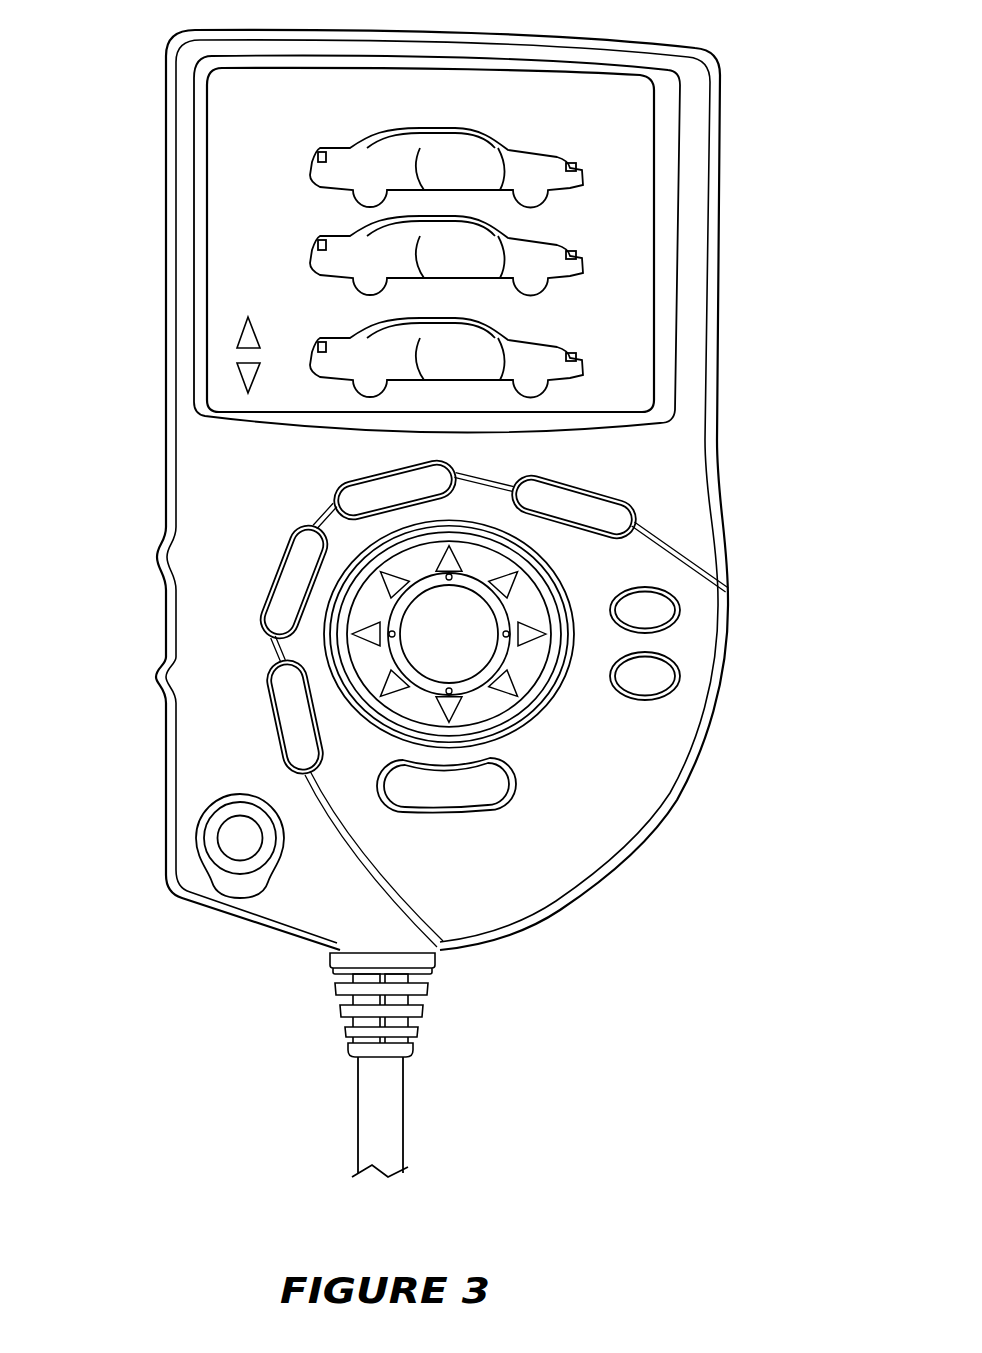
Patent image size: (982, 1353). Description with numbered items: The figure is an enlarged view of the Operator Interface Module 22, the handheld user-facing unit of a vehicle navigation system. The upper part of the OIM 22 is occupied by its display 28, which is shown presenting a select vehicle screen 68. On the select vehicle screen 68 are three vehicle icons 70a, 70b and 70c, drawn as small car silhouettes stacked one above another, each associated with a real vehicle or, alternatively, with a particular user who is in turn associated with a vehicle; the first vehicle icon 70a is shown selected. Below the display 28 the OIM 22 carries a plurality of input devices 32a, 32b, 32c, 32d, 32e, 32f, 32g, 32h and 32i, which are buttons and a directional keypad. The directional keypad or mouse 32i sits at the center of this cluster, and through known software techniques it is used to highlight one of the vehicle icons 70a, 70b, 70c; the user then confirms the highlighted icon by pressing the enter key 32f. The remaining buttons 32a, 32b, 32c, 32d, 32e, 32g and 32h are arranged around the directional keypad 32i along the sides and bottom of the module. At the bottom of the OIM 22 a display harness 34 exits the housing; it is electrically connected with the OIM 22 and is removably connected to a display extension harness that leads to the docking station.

The Operator Interface Module 22 is at (740, 60).
The display 28 is at (655, 248).
The select vehicle screen 68 is at (228, 133).
The vehicle icon 70a is at (537, 162).
The vehicle icon 70b is at (537, 250).
The vehicle icon 70c is at (530, 345).
The input device 32a is at (223, 839).
The input device 32b is at (432, 795).
The input device 32c is at (288, 738).
The input device 32d is at (275, 602).
The input device 32e is at (350, 480).
The enter key 32f is at (587, 484).
The input device 32g is at (677, 607).
The input device 32h is at (657, 678).
The directional keypad 32i is at (483, 703).
The display harness 34 is at (390, 1082).